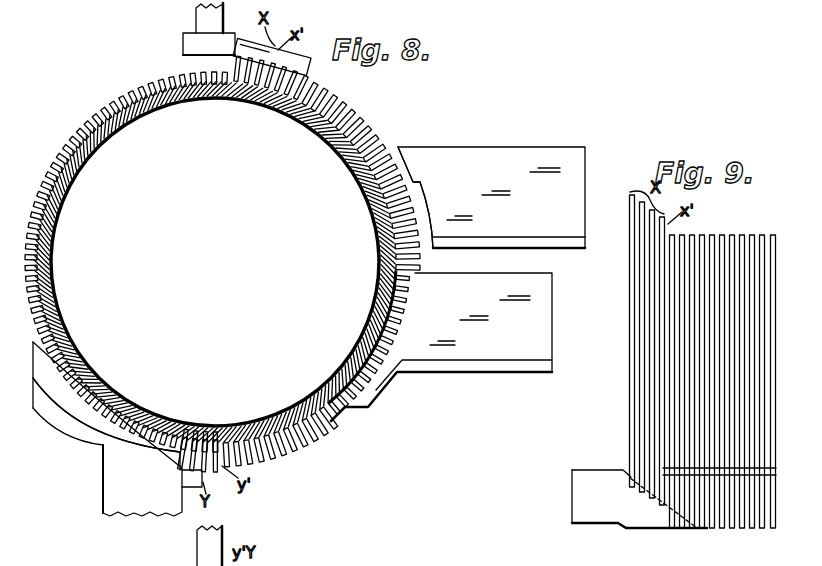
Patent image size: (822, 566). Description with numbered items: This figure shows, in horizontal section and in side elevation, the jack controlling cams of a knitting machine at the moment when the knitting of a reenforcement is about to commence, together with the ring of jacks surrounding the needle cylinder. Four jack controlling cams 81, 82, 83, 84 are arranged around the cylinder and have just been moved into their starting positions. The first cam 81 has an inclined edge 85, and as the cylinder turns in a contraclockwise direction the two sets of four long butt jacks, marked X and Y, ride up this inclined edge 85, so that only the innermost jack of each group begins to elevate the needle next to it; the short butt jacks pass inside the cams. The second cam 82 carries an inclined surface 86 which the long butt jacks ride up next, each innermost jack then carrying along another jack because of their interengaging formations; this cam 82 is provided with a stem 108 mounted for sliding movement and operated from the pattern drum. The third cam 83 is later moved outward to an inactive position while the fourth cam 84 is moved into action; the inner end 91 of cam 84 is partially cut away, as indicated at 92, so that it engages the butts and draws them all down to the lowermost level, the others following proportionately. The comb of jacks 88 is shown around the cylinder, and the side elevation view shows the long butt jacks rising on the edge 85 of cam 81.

In FIG. 8, the jack controlling cam 81 is at (183, 45).
In FIG. 9, the jack controlling cam 81 is at (623, 512).
In FIG. 8, the jack controlling cam 82 is at (83, 433).
In FIG. 8, the jack controlling cam 83 is at (443, 350).
In FIG. 8, the jack controlling cam 84 is at (474, 152).
In FIG. 8, the inclined edge 85 is at (303, 561).
In FIG. 9, the inclined edge 85 is at (667, 512).
In FIG. 8, the inclined surface 86 is at (67, 393).
In FIG. 8, the comb ring 88 is at (398, 333).
In FIG. 8, the inner end 91 is at (404, 162).
In FIG. 8, the cut away portion 92 is at (430, 208).
In FIG. 8, the stem 108 is at (125, 502).